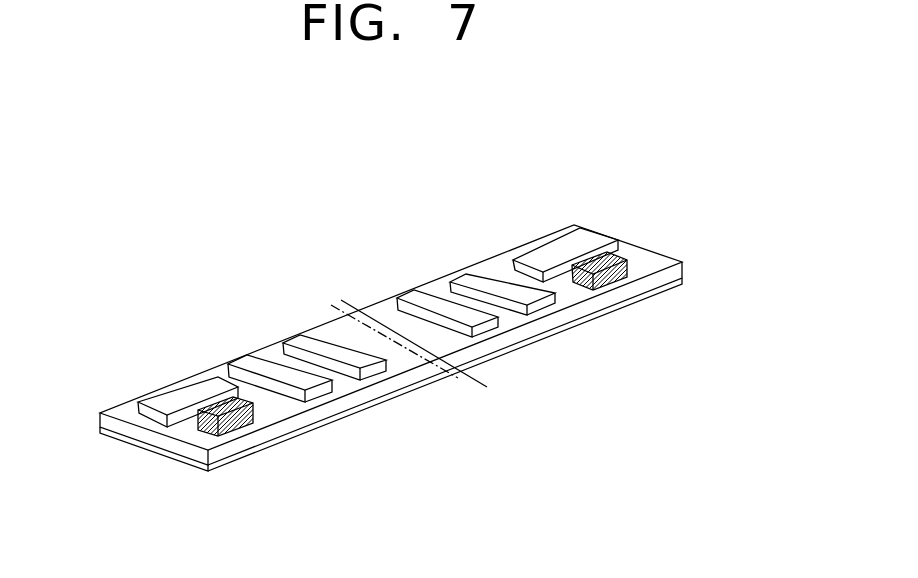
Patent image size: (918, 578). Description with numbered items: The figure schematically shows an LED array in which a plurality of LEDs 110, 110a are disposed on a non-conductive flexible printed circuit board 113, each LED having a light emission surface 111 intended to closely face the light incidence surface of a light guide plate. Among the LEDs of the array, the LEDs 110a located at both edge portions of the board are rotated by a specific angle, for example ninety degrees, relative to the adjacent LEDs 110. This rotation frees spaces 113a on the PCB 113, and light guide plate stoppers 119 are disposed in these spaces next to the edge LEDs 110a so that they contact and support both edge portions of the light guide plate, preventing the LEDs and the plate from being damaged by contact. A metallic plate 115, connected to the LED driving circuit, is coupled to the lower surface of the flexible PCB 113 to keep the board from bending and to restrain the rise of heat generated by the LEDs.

The LEDs 110 is at (241, 378).
The LEDs at both edge portions 110a is at (137, 410).
The light emission surface 111 is at (188, 393).
The flexible printed circuit board 113 is at (143, 438).
The spaces of the PCB 113a is at (283, 392).
The metallic plate 115 is at (177, 462).
The light guide plate stopper 119 is at (237, 430).